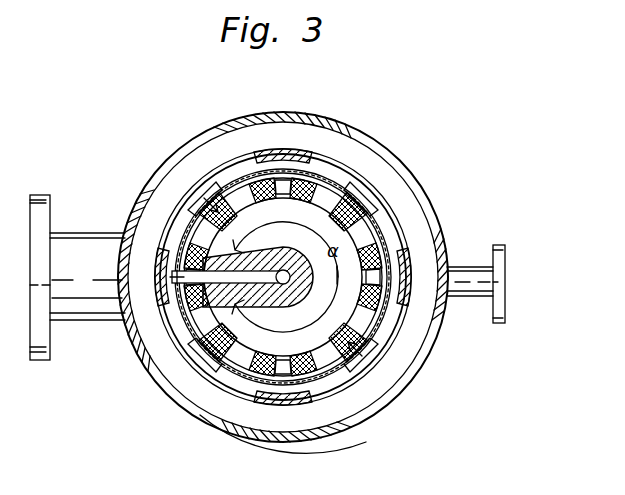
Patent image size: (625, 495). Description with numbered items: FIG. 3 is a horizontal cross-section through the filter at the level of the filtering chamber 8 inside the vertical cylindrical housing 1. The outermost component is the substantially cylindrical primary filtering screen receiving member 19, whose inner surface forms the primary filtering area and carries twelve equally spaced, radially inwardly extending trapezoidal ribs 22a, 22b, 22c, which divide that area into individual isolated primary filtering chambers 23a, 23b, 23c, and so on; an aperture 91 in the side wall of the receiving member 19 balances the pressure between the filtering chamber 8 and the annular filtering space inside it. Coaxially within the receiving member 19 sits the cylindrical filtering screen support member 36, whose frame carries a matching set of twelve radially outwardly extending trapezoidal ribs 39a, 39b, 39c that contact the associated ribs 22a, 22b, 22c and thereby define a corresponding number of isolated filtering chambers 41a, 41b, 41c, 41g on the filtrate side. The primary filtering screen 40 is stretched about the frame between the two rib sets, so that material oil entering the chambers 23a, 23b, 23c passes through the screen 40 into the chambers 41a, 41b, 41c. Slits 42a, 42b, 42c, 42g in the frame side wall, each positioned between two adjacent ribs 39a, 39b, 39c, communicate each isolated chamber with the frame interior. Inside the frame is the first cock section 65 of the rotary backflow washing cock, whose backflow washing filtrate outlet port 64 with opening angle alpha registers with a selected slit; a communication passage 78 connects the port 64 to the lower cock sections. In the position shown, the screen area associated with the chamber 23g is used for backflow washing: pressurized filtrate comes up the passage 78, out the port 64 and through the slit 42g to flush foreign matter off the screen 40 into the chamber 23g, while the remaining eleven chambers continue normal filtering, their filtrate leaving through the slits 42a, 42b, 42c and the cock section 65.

The housing 1 is at (193, 134).
The filtering chamber 8 is at (349, 143).
The primary filtering screen receiving member 19 is at (394, 412).
The filtering screen support member 36 is at (378, 425).
The primary filtering screen 40 is at (384, 378).
The backflow washing filtrate outlet port 64 is at (212, 322).
The first cock section 65 is at (232, 373).
The communication passage 78 is at (280, 322).
The aperture 91 is at (475, 333).
The rib 22a is at (456, 372).
The rib 22b is at (445, 292).
The rib 22c is at (360, 187).
The primary filtering chamber 23a is at (455, 348).
The primary filtering chamber 23b is at (395, 238).
The primary filtering chamber 23c is at (345, 176).
The primary filtering chamber 23g is at (160, 243).
The rib 39a is at (396, 370).
The rib 39b is at (437, 322).
The rib 39c is at (372, 197).
The isolated filtering chamber 41a is at (440, 357).
The isolated filtering chamber 41b is at (437, 254).
The isolated filtering chamber 41c is at (313, 140).
The isolated filtering chamber 41g is at (150, 318).
The slit 42a is at (443, 372).
The slit 42b is at (385, 218).
The slit 42c is at (323, 205).
The slit 42g is at (200, 337).